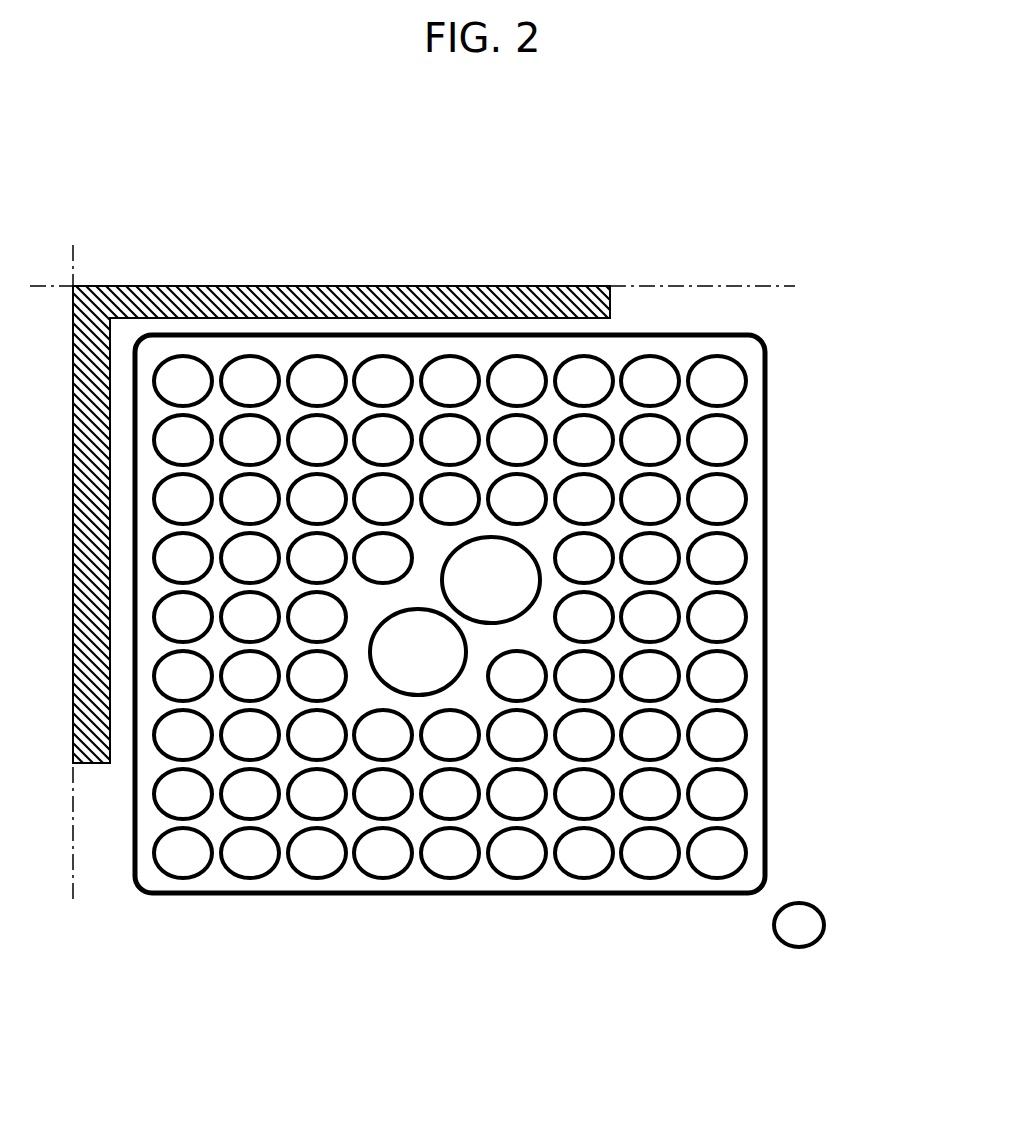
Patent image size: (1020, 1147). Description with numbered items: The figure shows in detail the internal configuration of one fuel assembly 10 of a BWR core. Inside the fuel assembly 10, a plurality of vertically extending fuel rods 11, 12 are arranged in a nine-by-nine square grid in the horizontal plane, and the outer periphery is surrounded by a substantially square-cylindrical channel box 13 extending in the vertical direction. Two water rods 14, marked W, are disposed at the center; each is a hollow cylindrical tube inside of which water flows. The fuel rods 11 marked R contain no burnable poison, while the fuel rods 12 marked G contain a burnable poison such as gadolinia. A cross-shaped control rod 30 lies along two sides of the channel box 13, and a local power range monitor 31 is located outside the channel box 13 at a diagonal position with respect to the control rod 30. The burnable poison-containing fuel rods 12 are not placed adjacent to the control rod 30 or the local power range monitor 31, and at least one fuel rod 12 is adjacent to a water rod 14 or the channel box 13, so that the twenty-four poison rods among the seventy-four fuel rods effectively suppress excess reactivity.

The fuel assembly 10 is at (512, 657).
The fuel rod not containing burnable poison 11 is at (745, 663).
The burnable poison-containing fuel rod 12 is at (571, 815).
The channel box 13 is at (765, 550).
The water rod 14 is at (425, 694).
The control rod 30 is at (528, 290).
The local power range monitor 31 is at (815, 905).